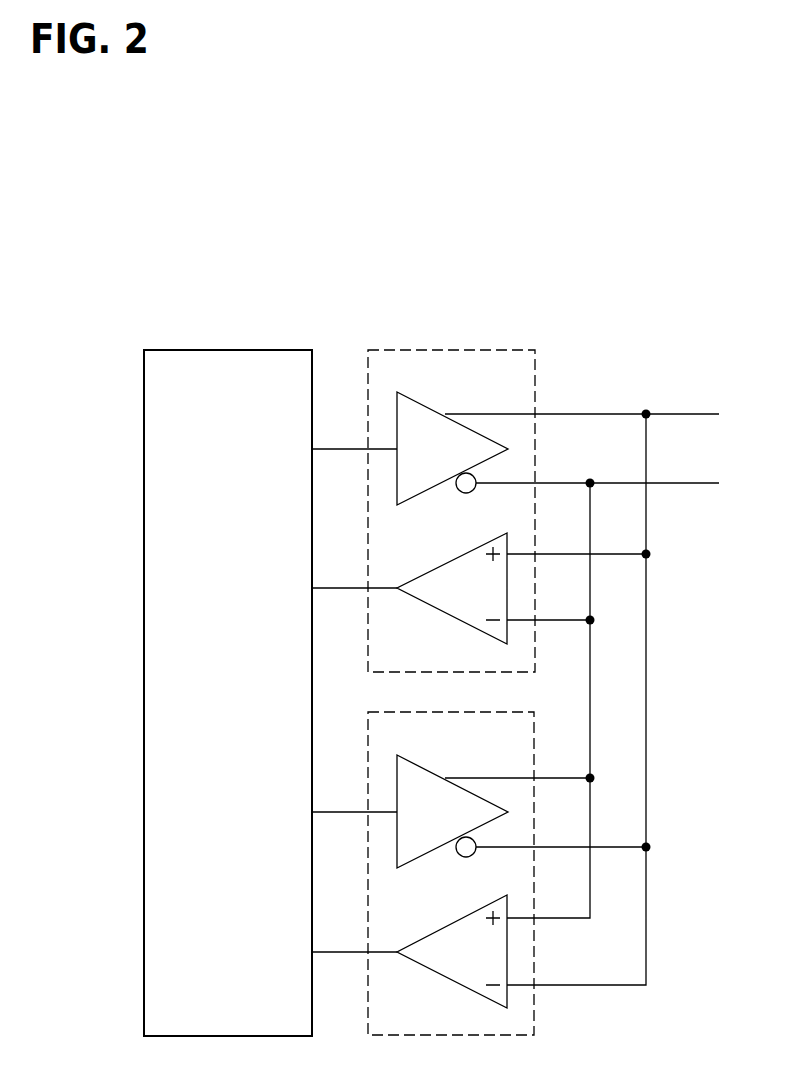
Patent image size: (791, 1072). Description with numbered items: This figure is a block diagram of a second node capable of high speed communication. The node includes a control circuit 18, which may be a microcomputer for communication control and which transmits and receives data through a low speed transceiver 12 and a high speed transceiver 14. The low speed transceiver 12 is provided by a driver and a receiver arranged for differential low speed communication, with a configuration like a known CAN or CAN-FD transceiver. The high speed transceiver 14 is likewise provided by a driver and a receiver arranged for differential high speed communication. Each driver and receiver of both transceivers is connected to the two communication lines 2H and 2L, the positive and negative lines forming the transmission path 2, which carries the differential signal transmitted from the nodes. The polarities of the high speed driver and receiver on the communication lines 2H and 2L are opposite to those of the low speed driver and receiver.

The control circuit 18 is at (255, 350).
The low speed transceiver 12 is at (480, 349).
The high speed transceiver 14 is at (478, 712).
The transmission path 2 is at (598, 678).
The communication line 2H is at (598, 416).
The communication line 2L is at (660, 503).